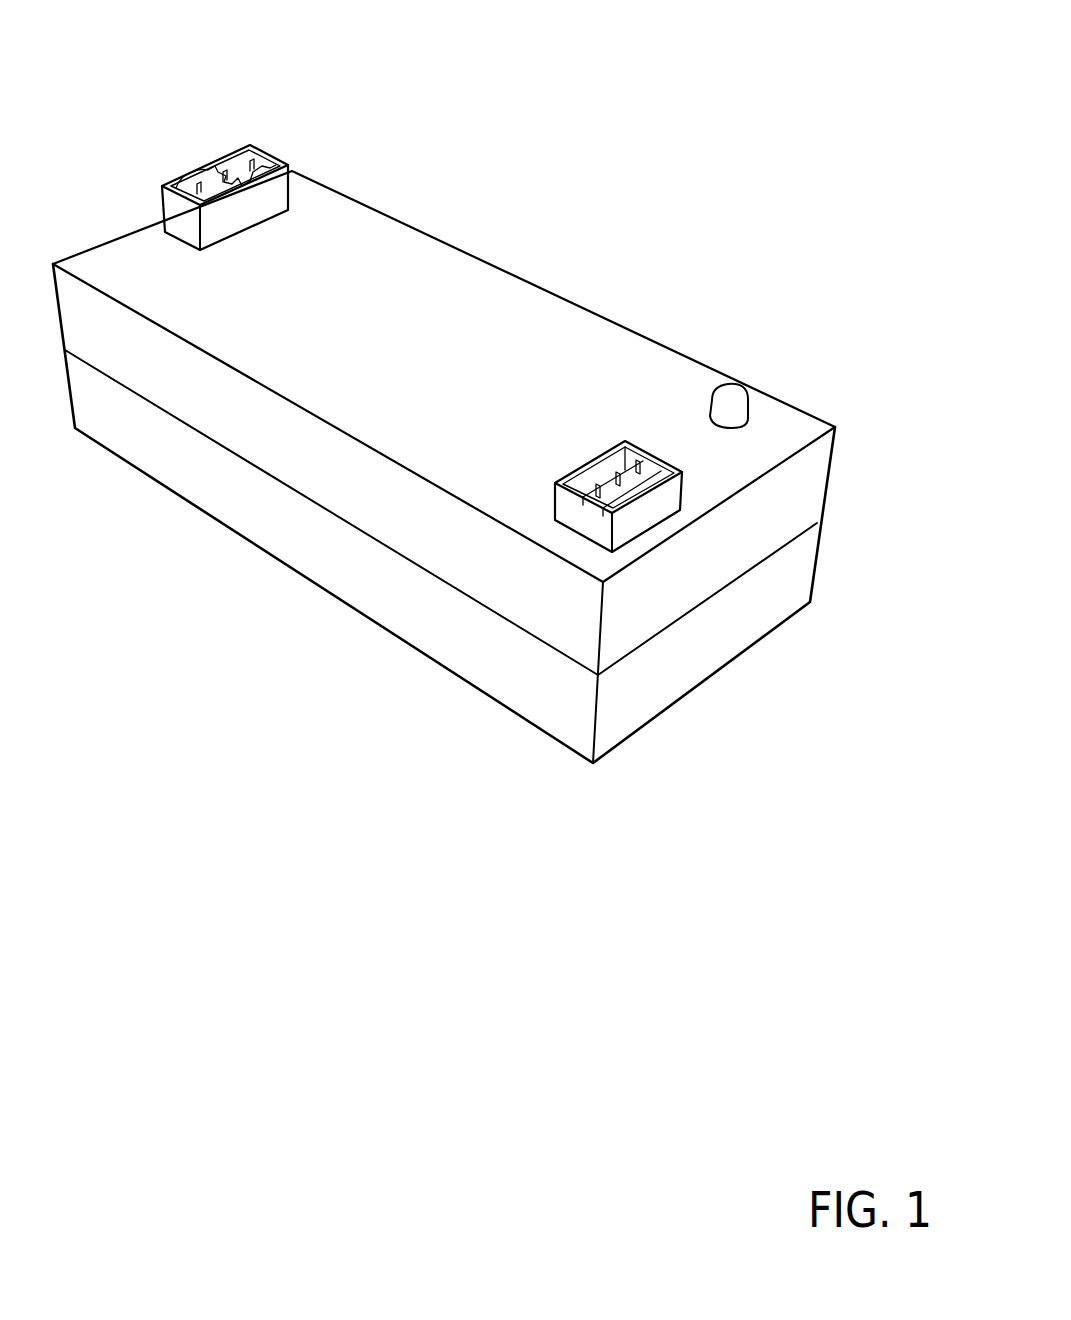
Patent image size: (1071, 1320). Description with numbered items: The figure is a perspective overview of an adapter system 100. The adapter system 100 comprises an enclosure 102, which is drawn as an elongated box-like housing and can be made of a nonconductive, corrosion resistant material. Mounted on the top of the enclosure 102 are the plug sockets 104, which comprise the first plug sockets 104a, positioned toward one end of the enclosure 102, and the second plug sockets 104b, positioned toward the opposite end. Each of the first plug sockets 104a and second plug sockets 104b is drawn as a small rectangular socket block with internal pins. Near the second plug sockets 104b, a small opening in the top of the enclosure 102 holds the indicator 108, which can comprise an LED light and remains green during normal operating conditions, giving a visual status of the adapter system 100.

The adapter system 100 is at (480, 463).
The enclosure 102 is at (536, 282).
The plug sockets 104 is at (479, 474).
The first plug sockets 104a is at (205, 168).
The second plug sockets 104b is at (613, 530).
The indicator 108 is at (727, 410).